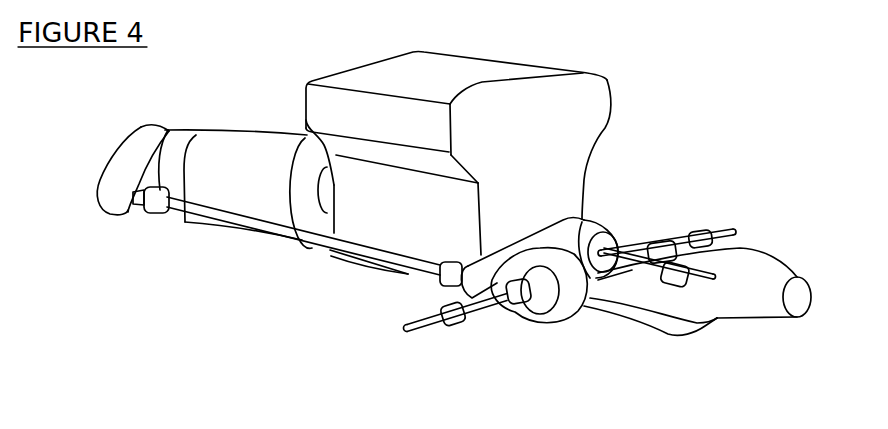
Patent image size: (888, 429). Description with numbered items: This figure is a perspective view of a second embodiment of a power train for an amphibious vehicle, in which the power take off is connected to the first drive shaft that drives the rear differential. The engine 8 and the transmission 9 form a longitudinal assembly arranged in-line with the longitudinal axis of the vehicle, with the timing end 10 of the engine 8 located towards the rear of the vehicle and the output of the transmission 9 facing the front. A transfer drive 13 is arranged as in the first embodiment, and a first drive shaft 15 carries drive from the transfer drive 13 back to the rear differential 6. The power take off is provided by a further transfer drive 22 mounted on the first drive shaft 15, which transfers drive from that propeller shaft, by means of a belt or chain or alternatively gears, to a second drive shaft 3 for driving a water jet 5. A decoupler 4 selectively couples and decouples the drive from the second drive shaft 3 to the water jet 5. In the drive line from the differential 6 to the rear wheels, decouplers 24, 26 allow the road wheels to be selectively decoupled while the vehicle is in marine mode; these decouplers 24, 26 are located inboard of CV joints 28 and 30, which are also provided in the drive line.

The second drive shaft 3 is at (632, 246).
The decoupler 4 is at (690, 267).
The water jet 5 is at (762, 278).
The rear differential 6 is at (572, 305).
The engine 8 is at (410, 227).
The transmission 9 is at (247, 193).
The timing end 10 is at (548, 171).
The transfer drive 13 is at (128, 157).
The first drive shaft 15 is at (303, 240).
The further transfer drive 22 is at (473, 283).
The decoupler 24 is at (522, 300).
The decoupler 26 is at (666, 243).
The CV joint 28 is at (450, 322).
The CV joint 30 is at (704, 233).